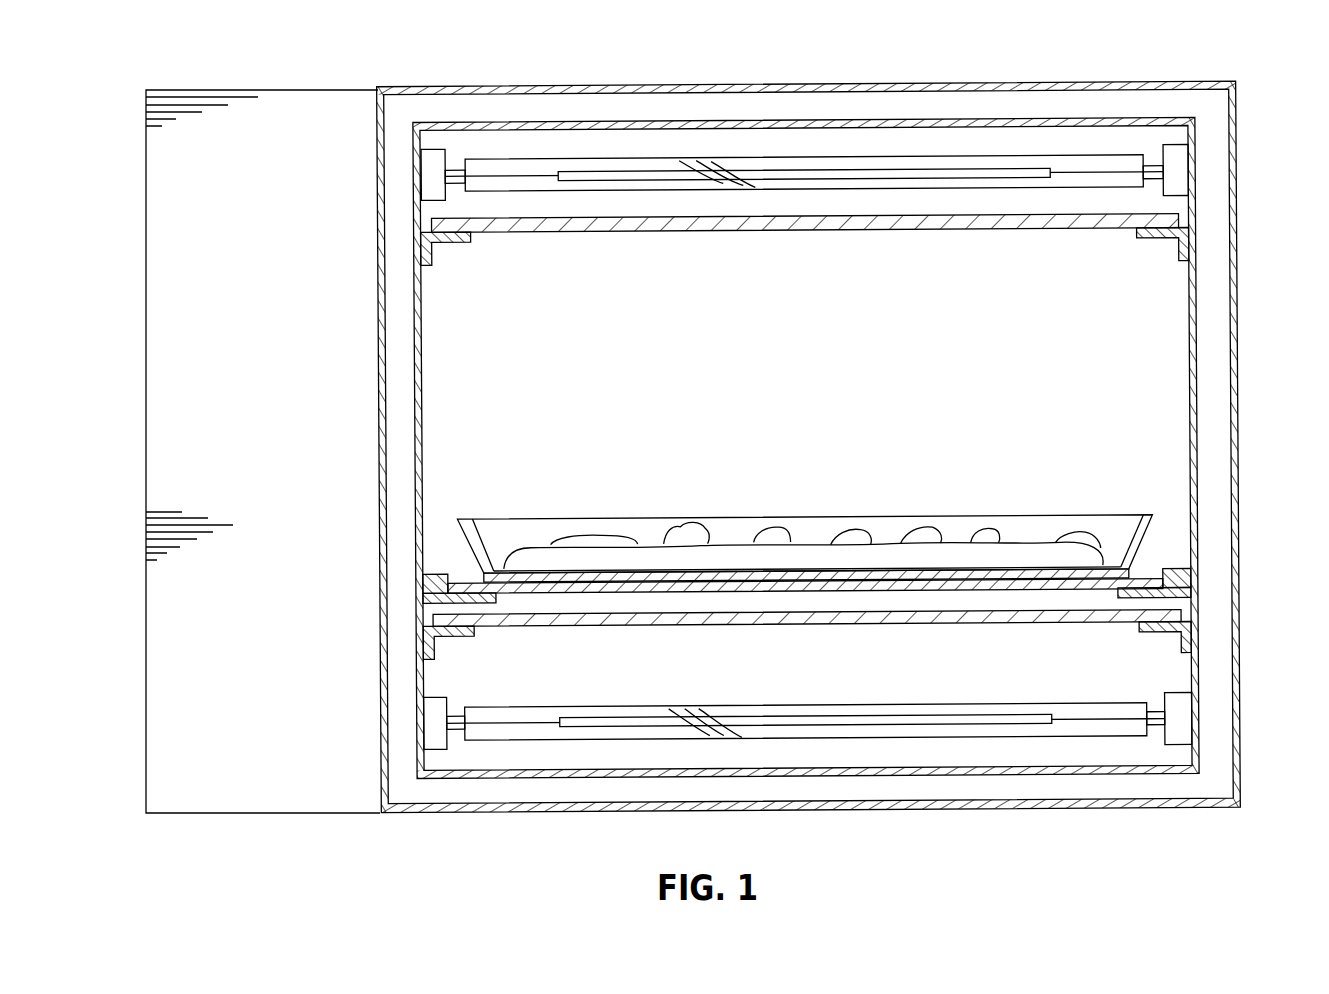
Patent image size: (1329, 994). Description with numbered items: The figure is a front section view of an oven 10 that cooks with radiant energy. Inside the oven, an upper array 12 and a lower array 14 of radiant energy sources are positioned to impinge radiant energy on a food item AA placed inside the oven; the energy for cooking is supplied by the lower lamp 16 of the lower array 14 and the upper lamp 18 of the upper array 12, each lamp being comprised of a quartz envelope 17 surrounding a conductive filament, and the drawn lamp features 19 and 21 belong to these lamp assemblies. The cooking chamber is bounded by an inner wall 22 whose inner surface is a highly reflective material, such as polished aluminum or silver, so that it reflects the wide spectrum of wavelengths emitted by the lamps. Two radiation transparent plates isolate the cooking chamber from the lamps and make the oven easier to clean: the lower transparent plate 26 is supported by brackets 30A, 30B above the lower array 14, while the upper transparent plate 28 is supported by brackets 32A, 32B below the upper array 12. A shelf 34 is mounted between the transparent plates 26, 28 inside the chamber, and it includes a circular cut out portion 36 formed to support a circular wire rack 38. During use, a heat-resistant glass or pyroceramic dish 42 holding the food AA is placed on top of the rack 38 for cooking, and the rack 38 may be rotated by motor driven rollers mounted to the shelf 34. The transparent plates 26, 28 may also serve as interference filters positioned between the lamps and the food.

The oven 10 is at (1243, 124).
The upper array of radiant energy sources 12 is at (804, 154).
The lower array of radiant energy sources 14 is at (737, 699).
The lower lamp 16 is at (999, 704).
The quartz envelope 17 is at (520, 157).
The upper lamp 18 is at (1010, 156).
The lower lamp tube 19 is at (520, 705).
The lower lamp filament 21 is at (735, 722).
The inner wall 22 is at (423, 360).
The lower transparent plate 26 is at (770, 624).
The upper transparent plate 28 is at (748, 230).
The bracket 30A is at (433, 648).
The bracket 30B is at (1180, 635).
The bracket 32A is at (435, 242).
The bracket 32B is at (1172, 242).
The shelf 34 is at (436, 572).
The circular cut out portion 36 is at (448, 572).
The circular wire rack 38 is at (661, 591).
The heat-resistant glass or pyroceramic dish 42 is at (490, 518).
The food item AA is at (733, 543).